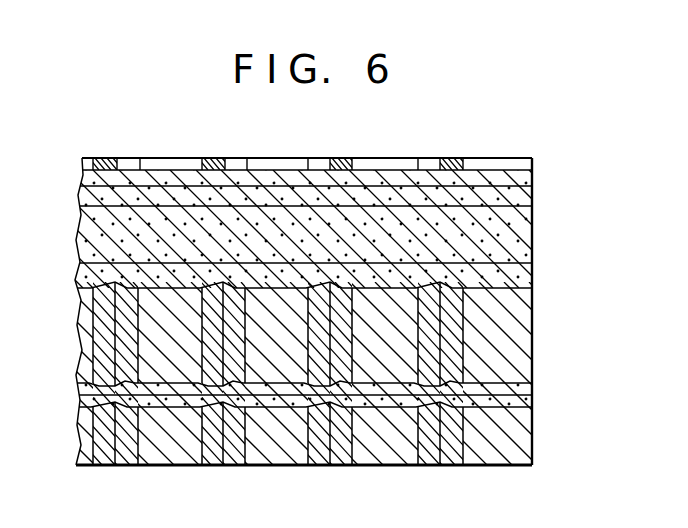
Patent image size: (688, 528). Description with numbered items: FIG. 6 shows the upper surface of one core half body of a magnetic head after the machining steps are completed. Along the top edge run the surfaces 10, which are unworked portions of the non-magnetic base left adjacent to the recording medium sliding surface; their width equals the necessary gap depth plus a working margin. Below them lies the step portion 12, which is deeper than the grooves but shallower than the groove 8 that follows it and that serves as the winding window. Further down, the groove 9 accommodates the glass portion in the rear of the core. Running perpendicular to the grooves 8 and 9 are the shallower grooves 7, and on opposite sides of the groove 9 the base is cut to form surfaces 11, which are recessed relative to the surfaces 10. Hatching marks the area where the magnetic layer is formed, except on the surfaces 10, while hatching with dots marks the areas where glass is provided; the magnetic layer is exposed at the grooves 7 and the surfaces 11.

The grooves 7 is at (130, 158).
The groove 8 is at (520, 238).
The groove 9 is at (523, 395).
The surfaces 10 is at (168, 162).
The surfaces 11 is at (571, 458).
The step portion 12 is at (528, 175).